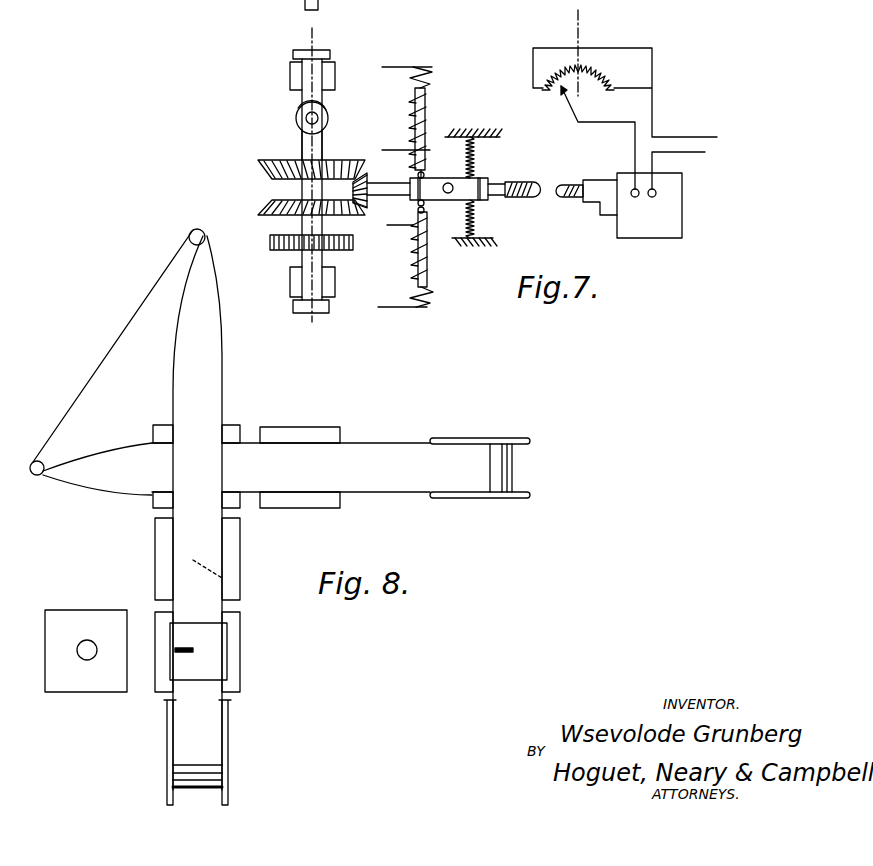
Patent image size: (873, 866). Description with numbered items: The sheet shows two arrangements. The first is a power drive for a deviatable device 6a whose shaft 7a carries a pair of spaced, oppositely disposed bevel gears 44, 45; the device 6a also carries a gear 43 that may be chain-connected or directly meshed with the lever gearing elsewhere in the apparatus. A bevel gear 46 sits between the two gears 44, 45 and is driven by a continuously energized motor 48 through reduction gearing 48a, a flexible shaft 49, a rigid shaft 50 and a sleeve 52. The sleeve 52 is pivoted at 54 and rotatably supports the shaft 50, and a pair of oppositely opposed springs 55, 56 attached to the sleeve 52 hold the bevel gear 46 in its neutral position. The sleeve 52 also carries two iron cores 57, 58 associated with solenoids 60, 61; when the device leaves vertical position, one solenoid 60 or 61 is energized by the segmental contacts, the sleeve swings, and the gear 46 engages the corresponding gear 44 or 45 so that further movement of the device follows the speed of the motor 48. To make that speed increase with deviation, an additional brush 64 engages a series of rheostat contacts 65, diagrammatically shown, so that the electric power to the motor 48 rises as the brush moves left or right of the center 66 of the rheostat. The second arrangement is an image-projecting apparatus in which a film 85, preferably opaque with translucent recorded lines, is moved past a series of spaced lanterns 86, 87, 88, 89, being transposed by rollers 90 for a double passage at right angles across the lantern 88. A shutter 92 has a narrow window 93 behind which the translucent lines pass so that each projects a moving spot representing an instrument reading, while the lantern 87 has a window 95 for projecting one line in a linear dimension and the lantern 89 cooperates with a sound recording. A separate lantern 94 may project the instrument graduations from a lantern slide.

In FIG. 7, the deviatable device 6a is at (306, 118).
In FIG. 7, the shaft 7a is at (303, 147).
In FIG. 7, the gear 43 is at (285, 252).
In FIG. 7, the bevel gear 44 is at (262, 164).
In FIG. 7, the bevel gear 45 is at (268, 208).
In FIG. 7, the bevel gear 46 is at (362, 173).
In FIG. 7, the motor 48 is at (645, 229).
In FIG. 7, the reduction gearing 48a is at (612, 213).
In FIG. 7, the flexible shaft 49 is at (528, 198).
In FIG. 7, the rigid shaft 50 is at (403, 178).
In FIG. 7, the sleeve 52 is at (473, 187).
In FIG. 7, the pivot 54 is at (452, 176).
In FIG. 7, the spring 55 is at (470, 176).
In FIG. 7, the spring 56 is at (474, 224).
In FIG. 7, the iron core 57 is at (428, 103).
In FIG. 7, the iron core 58 is at (416, 268).
In FIG. 7, the solenoid 60 is at (430, 82).
In FIG. 7, the solenoid 61 is at (430, 303).
In FIG. 7, the brush 64 is at (558, 99).
In FIG. 7, the rheostat contacts 65 is at (603, 88).
In FIG. 7, the center of the rheostat 66 is at (580, 36).
In FIG. 8, the film 85 is at (380, 455).
In FIG. 8, the lantern 86 is at (242, 649).
In FIG. 8, the lantern 87 is at (240, 556).
In FIG. 8, the lantern 88 is at (238, 433).
In FIG. 8, the lantern 89 is at (310, 436).
In FIG. 8, the rollers 90 is at (191, 232).
In FIG. 8, the shutter 92 is at (218, 642).
In FIG. 8, the window 93 is at (190, 653).
In FIG. 8, the lantern 94 is at (104, 627).
In FIG. 8, the window 95 is at (226, 580).